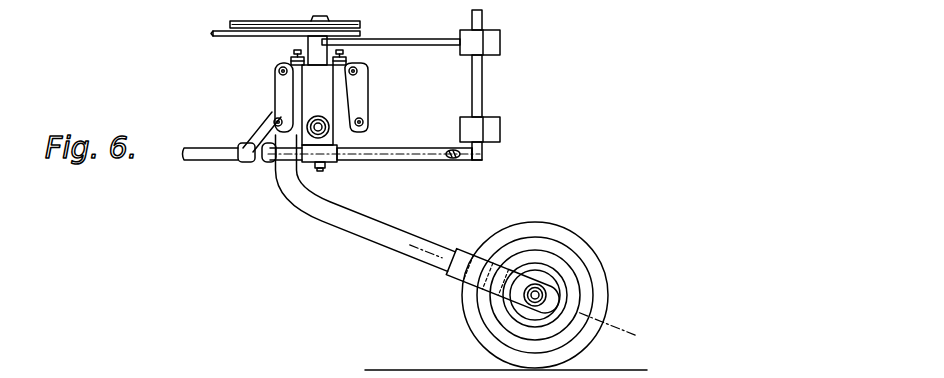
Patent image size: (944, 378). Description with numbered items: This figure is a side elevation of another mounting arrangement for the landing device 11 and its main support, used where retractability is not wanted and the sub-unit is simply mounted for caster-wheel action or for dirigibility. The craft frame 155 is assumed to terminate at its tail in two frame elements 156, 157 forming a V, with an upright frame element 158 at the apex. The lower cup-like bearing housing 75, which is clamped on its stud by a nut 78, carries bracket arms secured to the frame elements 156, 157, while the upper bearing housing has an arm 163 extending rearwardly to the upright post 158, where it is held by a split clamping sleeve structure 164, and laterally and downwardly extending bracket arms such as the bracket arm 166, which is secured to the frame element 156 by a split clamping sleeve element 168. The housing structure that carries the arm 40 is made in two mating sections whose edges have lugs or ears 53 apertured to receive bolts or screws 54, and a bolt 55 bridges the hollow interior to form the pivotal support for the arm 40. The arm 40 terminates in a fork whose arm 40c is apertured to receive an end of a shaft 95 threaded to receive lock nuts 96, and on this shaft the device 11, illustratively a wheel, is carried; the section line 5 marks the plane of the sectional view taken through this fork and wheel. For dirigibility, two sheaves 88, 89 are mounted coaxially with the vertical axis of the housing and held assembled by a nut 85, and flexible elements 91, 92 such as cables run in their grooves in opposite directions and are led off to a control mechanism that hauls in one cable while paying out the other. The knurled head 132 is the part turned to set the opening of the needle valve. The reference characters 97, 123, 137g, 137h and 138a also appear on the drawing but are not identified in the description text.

The section line 5- 5 is at (437, 250).
The landing device 11 is at (606, 258).
The arm 40 is at (335, 220).
The fork arm 40c is at (478, 262).
The lugs or ears 53 is at (279, 72).
The bolts or screws 54 is at (275, 124).
The bolt 55 is at (332, 143).
The bearing housing 75 is at (340, 165).
The nut 78 is at (325, 171).
The nut 85 is at (327, 17).
The sheave 88 is at (362, 24).
The sheave 89 is at (362, 33).
The flexible element 91 is at (232, 22).
The flexible element 92 is at (213, 33).
The shaft 95 is at (540, 287).
The lock nuts 96 is at (533, 307).
The rim 97 is at (571, 260).
The nut 123 is at (291, 60).
The head 132 is at (296, 51).
The arm 137g is at (545, 0).
The arm 137h is at (115, 7).
The pin 138a is at (515, 6).
The craft frame 155 is at (429, 164).
The frame element 156 is at (193, 156).
The frame element 157 is at (480, 161).
The upright frame element 158 is at (480, 88).
The arm 163 is at (436, 46).
The split clamping sleeve structure 164 is at (480, 43).
The bracket arm 166 is at (261, 142).
The split clamping sleeve element 168 is at (243, 163).